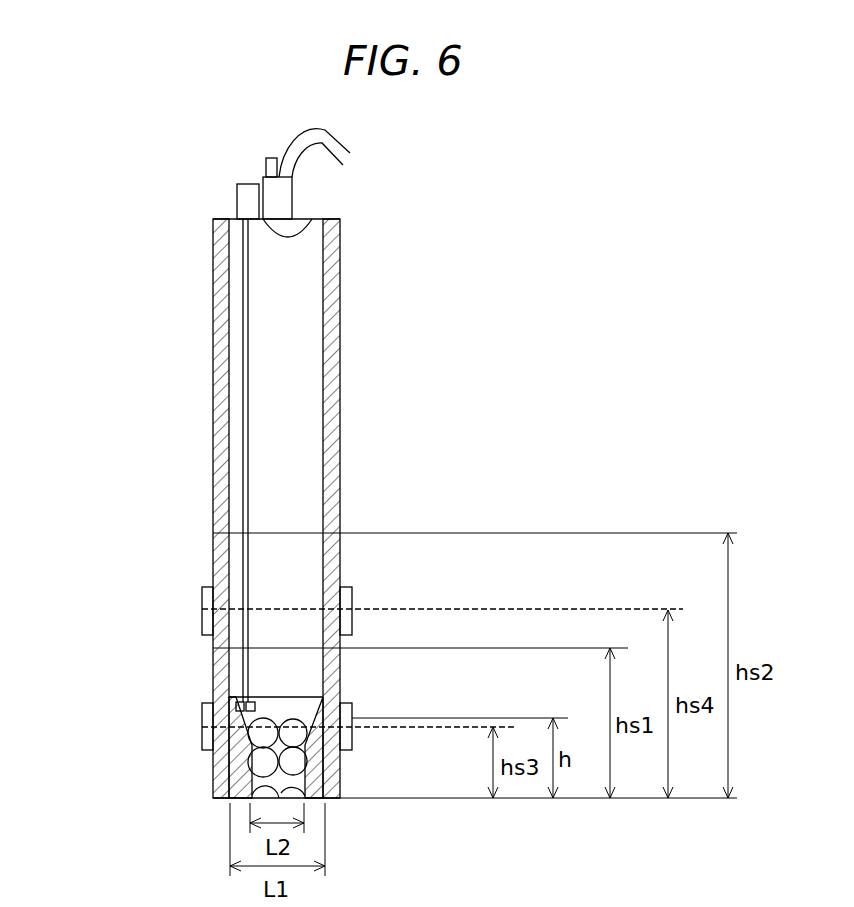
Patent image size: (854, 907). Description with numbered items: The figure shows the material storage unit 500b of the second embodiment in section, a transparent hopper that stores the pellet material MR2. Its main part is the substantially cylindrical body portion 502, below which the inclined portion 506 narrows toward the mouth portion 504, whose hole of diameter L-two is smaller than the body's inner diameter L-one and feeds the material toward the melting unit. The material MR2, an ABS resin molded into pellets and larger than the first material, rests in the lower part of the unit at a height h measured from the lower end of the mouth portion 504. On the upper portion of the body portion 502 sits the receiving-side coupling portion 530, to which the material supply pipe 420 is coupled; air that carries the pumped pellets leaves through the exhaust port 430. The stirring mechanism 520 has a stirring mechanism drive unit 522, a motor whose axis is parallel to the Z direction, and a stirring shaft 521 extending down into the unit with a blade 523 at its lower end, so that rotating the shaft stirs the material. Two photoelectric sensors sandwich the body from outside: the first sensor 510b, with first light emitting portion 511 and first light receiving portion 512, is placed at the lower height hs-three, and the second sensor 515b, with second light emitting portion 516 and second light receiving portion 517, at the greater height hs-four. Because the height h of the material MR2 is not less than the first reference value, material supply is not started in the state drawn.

The material storage unit 500b is at (430, 152).
The body portion 502 is at (340, 465).
The mouth portion 504 is at (340, 772).
The inclined portion 506 is at (353, 728).
The first sensor 510b is at (458, 655).
The first light emitting portion 511 is at (214, 714).
The first light receiving portion 512 is at (353, 720).
The second sensor 515b is at (458, 545).
The second light emitting portion 516 is at (215, 608).
The second light receiving portion 517 is at (353, 604).
The stirring mechanism 520 is at (88, 183).
The stirring shaft 521 is at (243, 300).
The stirring mechanism drive unit 522 is at (237, 202).
The blade 523 is at (234, 706).
The receiving-side coupling portion 530 is at (305, 226).
The material supply pipe 420 is at (326, 145).
The exhaust port 430 is at (270, 158).
The material MR2 is at (262, 762).